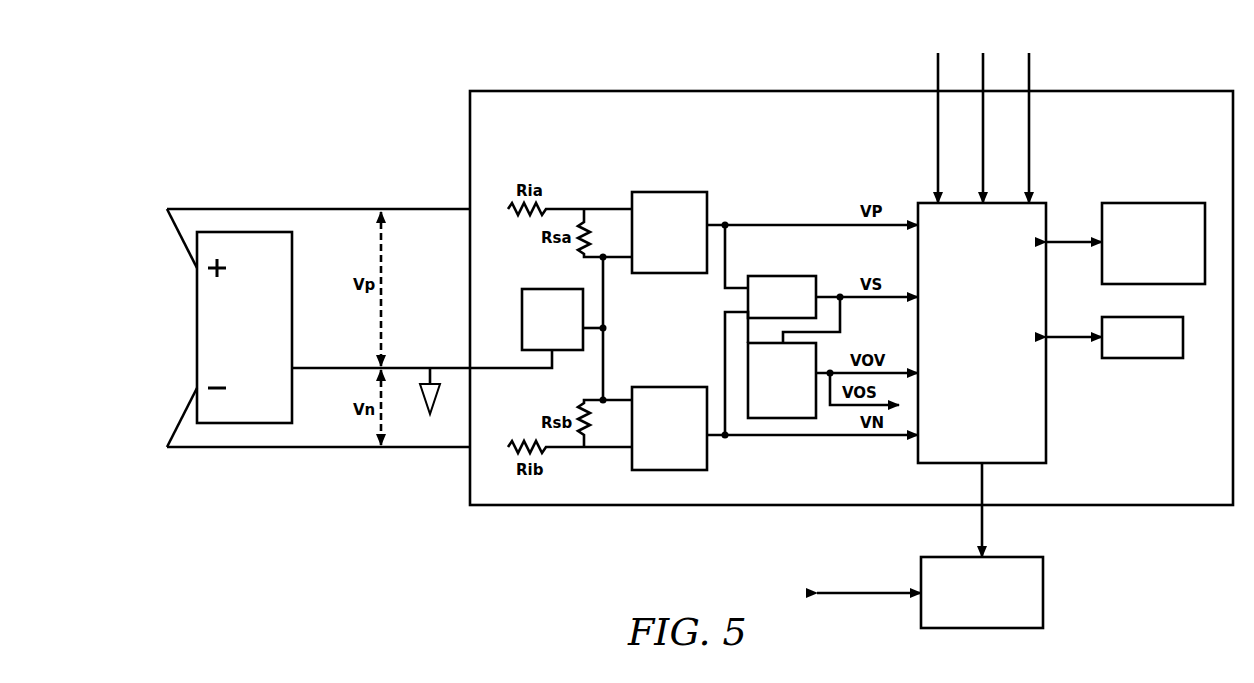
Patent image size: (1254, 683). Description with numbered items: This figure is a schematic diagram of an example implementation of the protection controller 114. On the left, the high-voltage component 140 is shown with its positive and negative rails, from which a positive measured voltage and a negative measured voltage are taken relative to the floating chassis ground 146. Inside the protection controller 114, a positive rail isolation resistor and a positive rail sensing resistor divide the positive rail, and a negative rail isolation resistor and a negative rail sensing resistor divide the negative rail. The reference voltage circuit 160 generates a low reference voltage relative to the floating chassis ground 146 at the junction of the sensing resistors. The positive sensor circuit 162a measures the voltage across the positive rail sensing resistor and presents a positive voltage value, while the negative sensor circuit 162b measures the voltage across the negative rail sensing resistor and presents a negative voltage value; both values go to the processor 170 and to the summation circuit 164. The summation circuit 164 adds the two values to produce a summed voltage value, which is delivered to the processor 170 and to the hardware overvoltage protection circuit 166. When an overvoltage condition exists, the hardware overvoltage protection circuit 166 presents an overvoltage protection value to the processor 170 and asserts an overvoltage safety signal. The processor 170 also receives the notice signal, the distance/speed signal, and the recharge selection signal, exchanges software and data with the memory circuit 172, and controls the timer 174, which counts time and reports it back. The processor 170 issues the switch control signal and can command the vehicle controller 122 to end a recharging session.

The protection controller 114 is at (555, 91).
The high-voltage component 140 is at (270, 232).
The floating chassis ground 146 is at (425, 405).
The reference voltage circuit 160 is at (533, 289).
The positive sensor circuit 162a is at (670, 192).
The negative sensor circuit 162b is at (670, 387).
The summation circuit 164 is at (852, 252).
The hardware overvoltage protection circuit 166 is at (785, 418).
The processor 170 is at (1046, 424).
The memory circuit 172 is at (1153, 203).
The timer 174 is at (1151, 358).
The vehicle controller 122 is at (1043, 583).